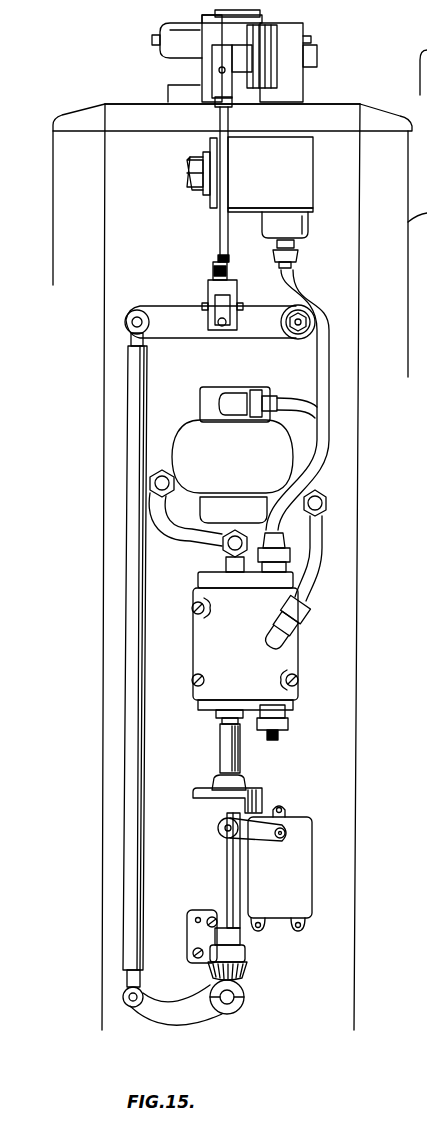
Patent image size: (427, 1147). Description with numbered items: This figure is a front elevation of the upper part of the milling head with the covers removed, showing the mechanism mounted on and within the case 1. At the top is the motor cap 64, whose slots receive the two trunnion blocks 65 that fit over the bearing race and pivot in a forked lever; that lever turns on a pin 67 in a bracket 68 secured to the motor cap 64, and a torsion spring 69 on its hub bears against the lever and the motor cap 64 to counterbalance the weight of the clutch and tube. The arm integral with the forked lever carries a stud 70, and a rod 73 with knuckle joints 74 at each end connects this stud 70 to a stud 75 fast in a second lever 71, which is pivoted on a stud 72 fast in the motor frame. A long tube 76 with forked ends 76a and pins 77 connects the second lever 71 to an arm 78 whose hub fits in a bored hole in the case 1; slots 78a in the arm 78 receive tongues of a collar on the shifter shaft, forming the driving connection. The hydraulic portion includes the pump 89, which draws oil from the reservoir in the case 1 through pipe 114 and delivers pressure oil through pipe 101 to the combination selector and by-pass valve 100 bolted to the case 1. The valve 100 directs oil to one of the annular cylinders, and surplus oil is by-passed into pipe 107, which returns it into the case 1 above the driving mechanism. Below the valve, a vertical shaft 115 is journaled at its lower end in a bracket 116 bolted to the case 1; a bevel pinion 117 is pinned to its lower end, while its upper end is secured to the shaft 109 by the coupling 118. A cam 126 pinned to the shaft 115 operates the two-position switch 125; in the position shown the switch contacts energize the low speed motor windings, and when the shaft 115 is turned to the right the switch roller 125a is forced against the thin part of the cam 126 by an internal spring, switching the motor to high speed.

The case 1 is at (356, 632).
The motor cap 64 is at (72, 117).
The trunnion blocks 65 is at (152, 40).
The pin 67 is at (318, 53).
The bracket 68 is at (302, 73).
The torsion spring 69 is at (275, 80).
The stud 70 is at (210, 58).
The second lever 71 is at (186, 312).
The stud 72 is at (305, 322).
The rod 73 is at (218, 228).
The knuckle joints 74 is at (215, 88).
The stud 75 is at (220, 328).
The tube 76 is at (133, 518).
The forked ends 76a is at (130, 339).
The pins 77 is at (134, 314).
The arm 78 is at (180, 1018).
The slots 78a is at (245, 1005).
The pump 89 is at (285, 458).
The combination selector and by-pass valve 100 is at (288, 655).
The pipe 101 is at (323, 410).
The pipe 107 is at (318, 552).
The shaft 109 is at (225, 720).
The pipe 114 is at (197, 535).
The vertical shaft 115 is at (227, 855).
The bracket 116 is at (197, 938).
The bevel pinion 117 is at (250, 968).
The coupling 118 is at (228, 740).
The two-position switch 125 is at (288, 862).
The switch roller 125a is at (214, 825).
The cam 126 is at (255, 805).